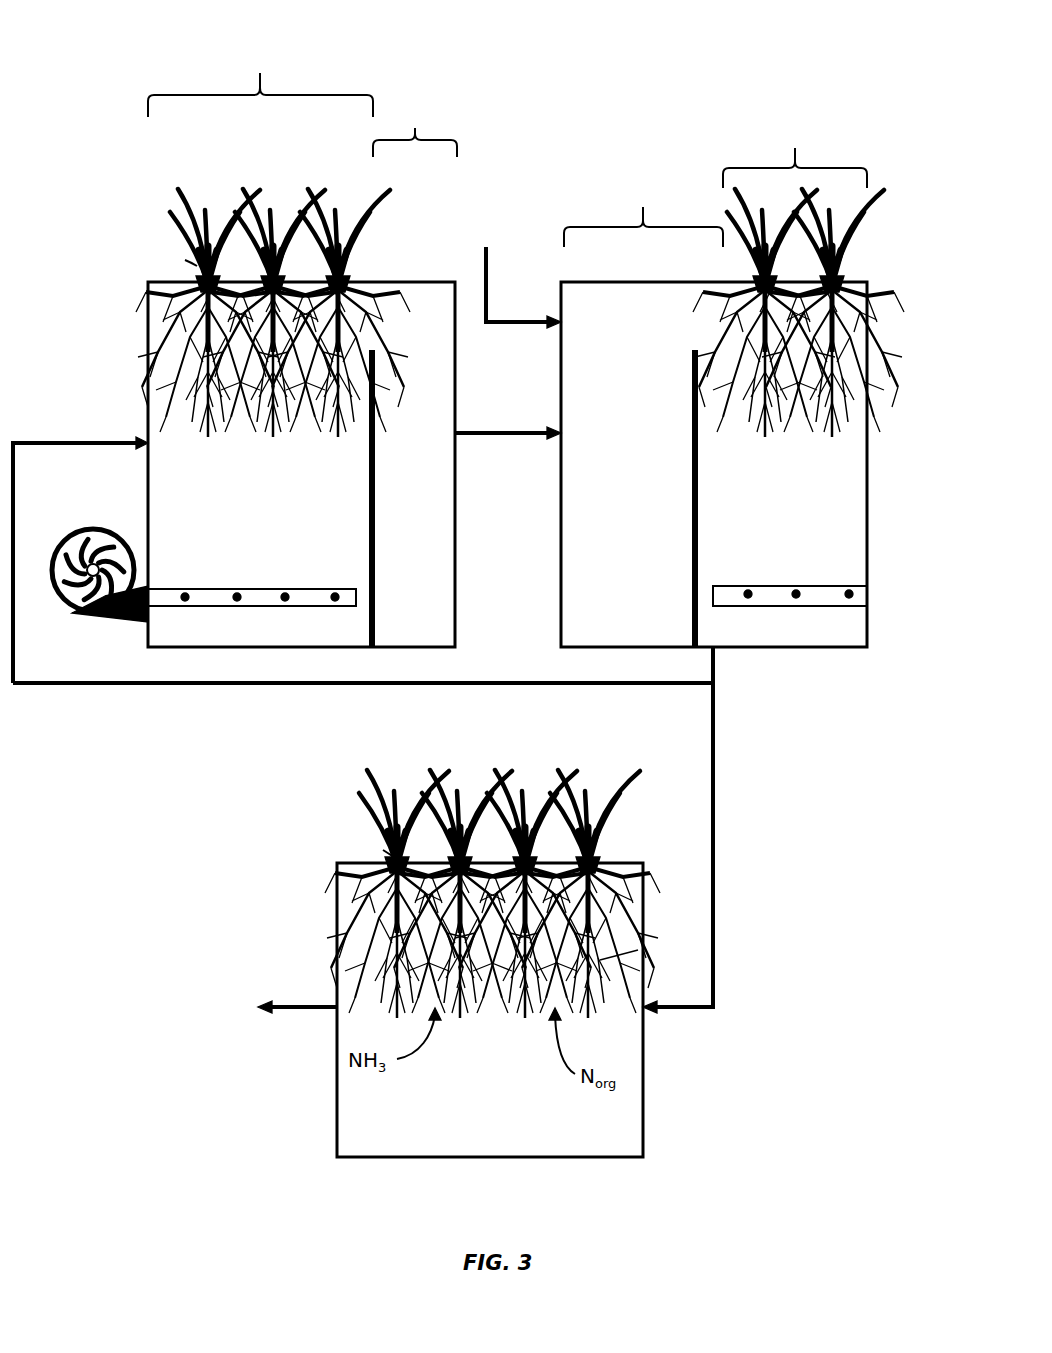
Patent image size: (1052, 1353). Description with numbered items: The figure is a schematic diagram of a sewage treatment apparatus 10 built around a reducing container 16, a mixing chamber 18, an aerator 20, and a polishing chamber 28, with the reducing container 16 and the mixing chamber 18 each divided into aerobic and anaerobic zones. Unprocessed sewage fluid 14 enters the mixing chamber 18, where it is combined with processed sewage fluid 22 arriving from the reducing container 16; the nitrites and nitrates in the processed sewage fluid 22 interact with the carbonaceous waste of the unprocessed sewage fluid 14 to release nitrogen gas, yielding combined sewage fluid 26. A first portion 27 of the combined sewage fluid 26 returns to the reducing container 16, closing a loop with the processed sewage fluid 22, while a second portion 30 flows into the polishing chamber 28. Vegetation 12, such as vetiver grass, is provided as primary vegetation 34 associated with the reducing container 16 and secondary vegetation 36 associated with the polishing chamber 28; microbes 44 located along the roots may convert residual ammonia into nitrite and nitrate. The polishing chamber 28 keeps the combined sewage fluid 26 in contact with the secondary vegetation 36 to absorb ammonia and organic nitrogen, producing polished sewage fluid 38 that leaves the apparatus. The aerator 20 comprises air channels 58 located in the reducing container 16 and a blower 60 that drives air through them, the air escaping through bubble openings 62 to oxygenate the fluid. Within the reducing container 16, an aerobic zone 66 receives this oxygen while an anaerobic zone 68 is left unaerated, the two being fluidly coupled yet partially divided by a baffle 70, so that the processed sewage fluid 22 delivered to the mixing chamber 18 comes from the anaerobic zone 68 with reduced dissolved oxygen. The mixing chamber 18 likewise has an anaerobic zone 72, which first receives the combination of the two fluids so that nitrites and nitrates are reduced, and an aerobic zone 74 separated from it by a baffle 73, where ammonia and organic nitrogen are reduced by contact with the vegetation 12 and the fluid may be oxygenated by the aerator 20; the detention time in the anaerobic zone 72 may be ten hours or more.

The sewage treatment apparatus 10 is at (56, 35).
The vegetation 12 is at (250, 200).
The unprocessed sewage fluid 14 is at (488, 250).
The reducing container 16 is at (313, 639).
The mixing chamber 18 is at (741, 639).
The aerator 20 is at (62, 540).
The processed sewage fluid 22 is at (495, 428).
The combined sewage fluid 26 is at (716, 668).
The first portion of the combined sewage fluid 27 is at (650, 690).
The polishing chamber 28 is at (490, 1010).
The second portion of the combined sewage fluid 30 is at (716, 790).
The primary vegetation 34 is at (197, 266).
The secondary vegetation 36 is at (395, 858).
The polished sewage fluid 38 is at (290, 1003).
The microbes 44 is at (636, 935).
The air channels 58 is at (205, 605).
The blower 60 is at (108, 533).
The bubble openings 62 is at (286, 584).
The aerobic zone 66 is at (260, 82).
The anaerobic zone 68 is at (415, 130).
The baffle 70 is at (377, 523).
The anaerobic zone 72 is at (643, 212).
The baffle 73 is at (698, 475).
The aerobic zone 74 is at (795, 153).